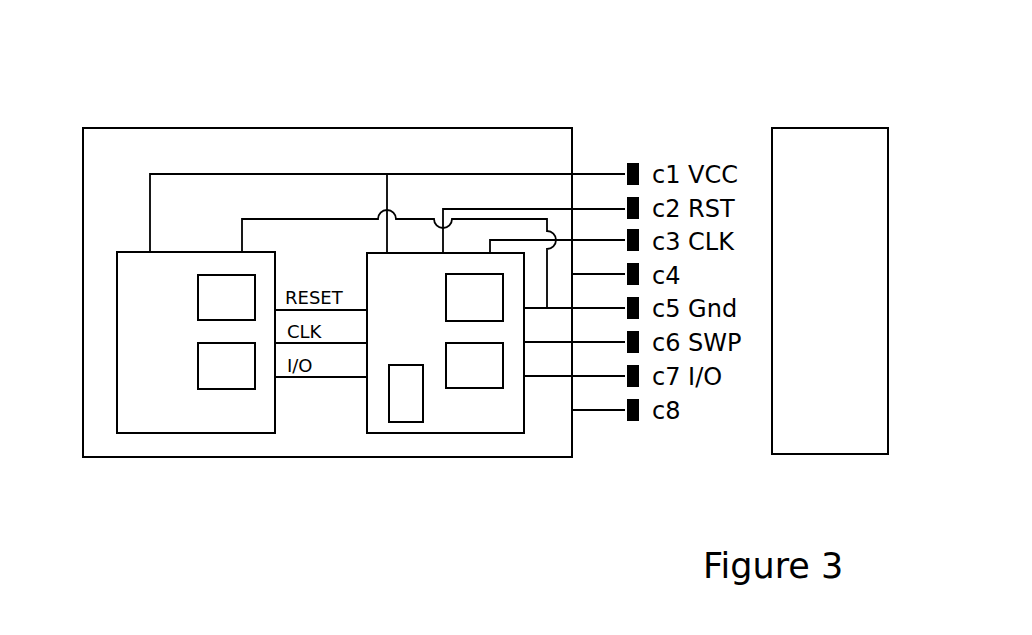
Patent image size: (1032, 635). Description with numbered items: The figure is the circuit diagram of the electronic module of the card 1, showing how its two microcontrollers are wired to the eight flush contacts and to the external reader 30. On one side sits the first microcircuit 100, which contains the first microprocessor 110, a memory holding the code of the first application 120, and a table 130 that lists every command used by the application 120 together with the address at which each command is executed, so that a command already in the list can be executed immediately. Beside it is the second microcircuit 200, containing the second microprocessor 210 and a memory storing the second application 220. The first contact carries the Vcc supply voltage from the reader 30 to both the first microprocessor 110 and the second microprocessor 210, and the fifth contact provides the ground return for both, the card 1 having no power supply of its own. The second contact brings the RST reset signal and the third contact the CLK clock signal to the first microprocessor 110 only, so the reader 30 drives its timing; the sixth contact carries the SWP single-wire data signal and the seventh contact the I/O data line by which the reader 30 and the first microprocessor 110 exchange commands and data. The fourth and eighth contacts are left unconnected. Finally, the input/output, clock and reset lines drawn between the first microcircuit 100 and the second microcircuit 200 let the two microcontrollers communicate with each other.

The card 1 is at (106, 101).
The reader 30 is at (788, 145).
The first microcircuit 100 is at (436, 425).
The first microprocessor 110 is at (482, 370).
The first application 120 is at (473, 302).
The table 130 is at (407, 385).
The second microcircuit 200 is at (144, 414).
The second microprocessor 210 is at (223, 370).
The second application 220 is at (226, 303).